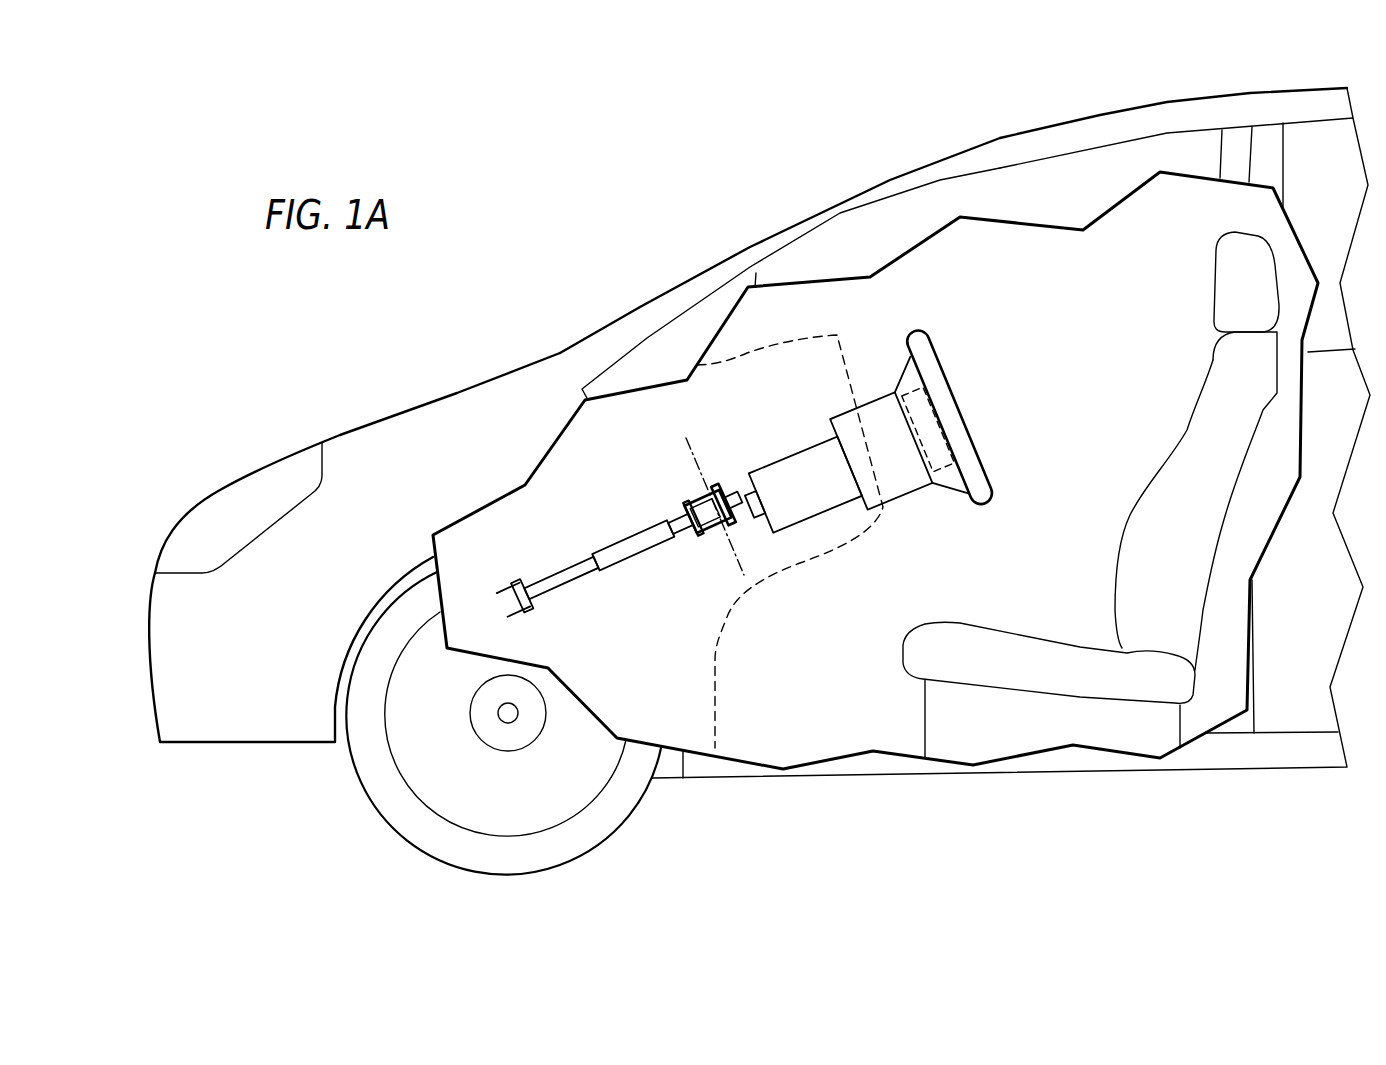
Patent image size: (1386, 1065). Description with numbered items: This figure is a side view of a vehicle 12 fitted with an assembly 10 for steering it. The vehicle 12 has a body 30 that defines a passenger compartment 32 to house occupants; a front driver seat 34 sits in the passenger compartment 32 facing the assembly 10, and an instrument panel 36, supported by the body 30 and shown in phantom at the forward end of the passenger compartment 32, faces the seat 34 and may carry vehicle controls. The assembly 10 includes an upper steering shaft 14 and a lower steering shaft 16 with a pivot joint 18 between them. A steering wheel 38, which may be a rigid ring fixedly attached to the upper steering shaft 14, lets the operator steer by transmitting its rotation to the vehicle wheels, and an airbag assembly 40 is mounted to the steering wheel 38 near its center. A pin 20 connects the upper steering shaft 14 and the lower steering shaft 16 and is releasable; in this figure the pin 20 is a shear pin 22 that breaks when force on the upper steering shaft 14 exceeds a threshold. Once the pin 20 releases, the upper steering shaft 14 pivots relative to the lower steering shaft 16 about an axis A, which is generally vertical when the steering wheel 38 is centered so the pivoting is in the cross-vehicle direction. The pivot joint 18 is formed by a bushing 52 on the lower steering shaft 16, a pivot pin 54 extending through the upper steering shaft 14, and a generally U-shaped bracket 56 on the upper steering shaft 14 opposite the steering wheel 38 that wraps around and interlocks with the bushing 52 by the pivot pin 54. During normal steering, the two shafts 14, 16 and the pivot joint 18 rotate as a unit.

The vehicle 12 is at (1158, 62).
The body 30 is at (978, 140).
The passenger compartment 32 is at (930, 273).
The instrument panel 36 is at (797, 343).
The seat 34 is at (1228, 293).
The assembly 10 is at (960, 330).
The steering wheel 38 is at (988, 508).
The airbag assembly 40 is at (927, 425).
The upper steering shaft 14 is at (747, 508).
The lower steering shaft 16 is at (635, 550).
The pivot joint 18 is at (668, 470).
The pin 20 is at (655, 507).
The shear pin 22 is at (687, 505).
The bushing 52 is at (727, 490).
The pivot pin 54 is at (710, 488).
The bracket 56 is at (693, 497).
The axis A is at (733, 550).